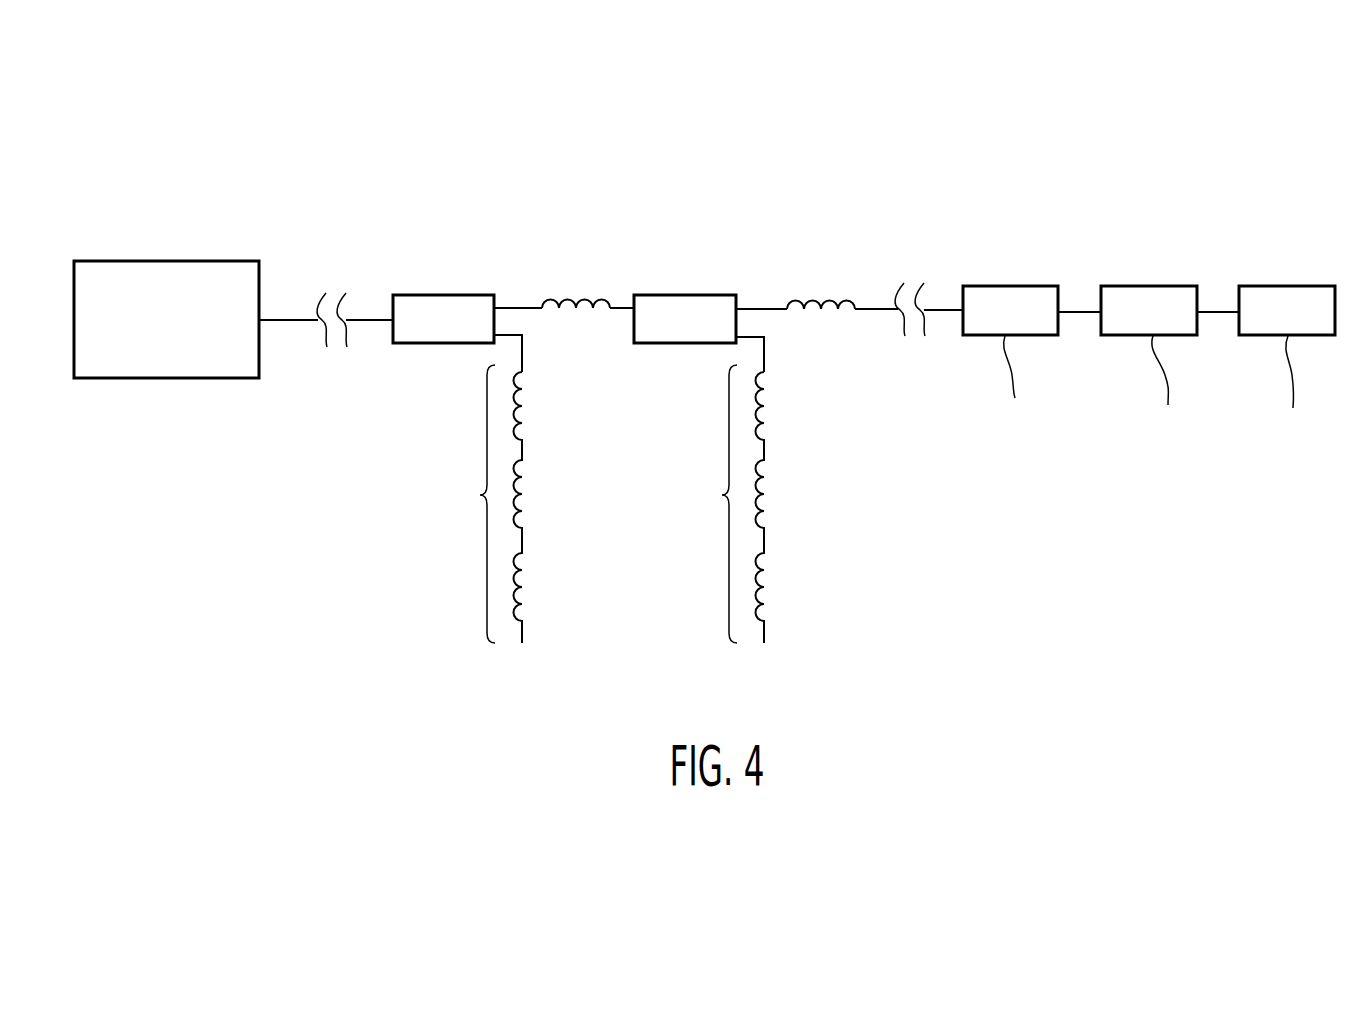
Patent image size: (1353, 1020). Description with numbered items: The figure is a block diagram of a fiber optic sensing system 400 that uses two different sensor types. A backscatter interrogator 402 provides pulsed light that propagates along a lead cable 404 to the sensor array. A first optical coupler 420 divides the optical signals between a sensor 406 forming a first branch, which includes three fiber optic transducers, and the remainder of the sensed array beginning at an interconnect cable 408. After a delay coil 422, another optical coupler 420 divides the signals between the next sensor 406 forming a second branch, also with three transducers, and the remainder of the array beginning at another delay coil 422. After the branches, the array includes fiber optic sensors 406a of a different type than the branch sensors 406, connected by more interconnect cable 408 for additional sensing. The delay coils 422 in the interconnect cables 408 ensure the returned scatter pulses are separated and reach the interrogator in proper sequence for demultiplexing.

The fiber optic sensing system 400 is at (963, 132).
The backscatter interrogator 402 is at (105, 260).
The lead cable 404 is at (287, 318).
The sensor 406 is at (438, 530).
The fiber optic sensors 406a is at (1012, 286).
The interconnect cable 408 is at (515, 307).
The optical coupler 420 is at (417, 294).
The delay coil 422 is at (567, 292).